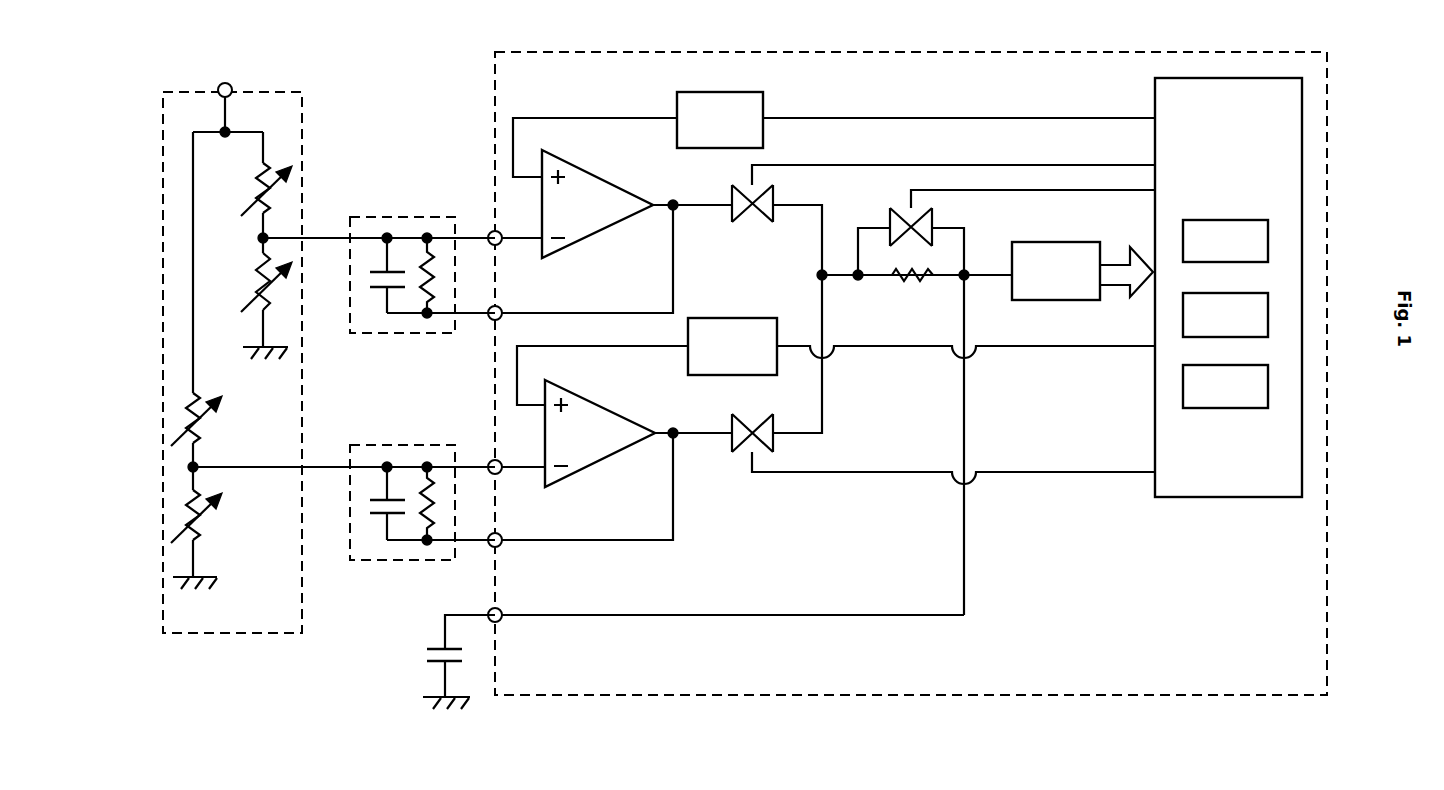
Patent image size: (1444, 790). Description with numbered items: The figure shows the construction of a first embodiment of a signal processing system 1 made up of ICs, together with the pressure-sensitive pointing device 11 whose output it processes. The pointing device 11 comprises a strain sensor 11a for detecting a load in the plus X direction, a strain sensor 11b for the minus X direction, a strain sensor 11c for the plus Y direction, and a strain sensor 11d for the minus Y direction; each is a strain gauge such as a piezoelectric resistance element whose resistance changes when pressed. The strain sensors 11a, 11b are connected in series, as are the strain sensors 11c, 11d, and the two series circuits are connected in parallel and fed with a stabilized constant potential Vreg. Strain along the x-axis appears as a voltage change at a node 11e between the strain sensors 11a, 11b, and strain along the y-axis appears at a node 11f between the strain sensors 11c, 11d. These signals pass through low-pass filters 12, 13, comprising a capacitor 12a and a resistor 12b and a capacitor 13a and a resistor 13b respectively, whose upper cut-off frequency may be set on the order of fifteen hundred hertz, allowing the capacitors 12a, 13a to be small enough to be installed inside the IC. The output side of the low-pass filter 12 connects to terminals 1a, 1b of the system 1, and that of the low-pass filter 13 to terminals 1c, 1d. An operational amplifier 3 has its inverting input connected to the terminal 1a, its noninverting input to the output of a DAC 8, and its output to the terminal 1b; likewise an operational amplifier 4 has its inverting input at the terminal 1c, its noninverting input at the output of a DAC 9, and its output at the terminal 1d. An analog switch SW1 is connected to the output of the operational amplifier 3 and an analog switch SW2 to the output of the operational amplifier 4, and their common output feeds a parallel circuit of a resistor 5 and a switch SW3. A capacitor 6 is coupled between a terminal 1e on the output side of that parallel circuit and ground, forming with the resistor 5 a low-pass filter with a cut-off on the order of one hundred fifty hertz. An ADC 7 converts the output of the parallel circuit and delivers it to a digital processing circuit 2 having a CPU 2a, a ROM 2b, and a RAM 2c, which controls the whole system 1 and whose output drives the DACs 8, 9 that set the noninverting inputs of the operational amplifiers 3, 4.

The signal processing system 1 is at (910, 50).
The terminal 1a is at (490, 230).
The terminal 1b is at (488, 321).
The terminal 1c is at (490, 460).
The terminal 1d is at (488, 548).
The terminal 1e is at (493, 623).
The digital processing circuit 2 is at (1225, 497).
The CPU 2a is at (1268, 240).
The ROM 2b is at (1268, 315).
The RAM 2c is at (1268, 387).
The operational amplifier 3 is at (600, 175).
The operational amplifier 4 is at (605, 405).
The resistor 5 is at (905, 284).
The capacitor 6 is at (432, 663).
The ADC 7 is at (1062, 242).
The DAC 8 is at (745, 92).
The DAC 9 is at (723, 317).
The pressure-sensitive pointing device 11 is at (302, 150).
The strain sensor 11a is at (258, 188).
The strain sensor 11b is at (258, 297).
The strain sensor 11c is at (183, 414).
The strain sensor 11d is at (207, 533).
The node 11e is at (258, 238).
The node 11f is at (190, 468).
The low-pass filter 12 is at (388, 217).
The capacitor 12a is at (375, 290).
The resistor 12b is at (423, 290).
The low-pass filter 13 is at (388, 445).
The capacitor 13a is at (378, 514).
The resistor 13b is at (425, 514).
The analog switch SW1 is at (757, 225).
The analog switch SW2 is at (733, 440).
The switch SW3 is at (930, 222).